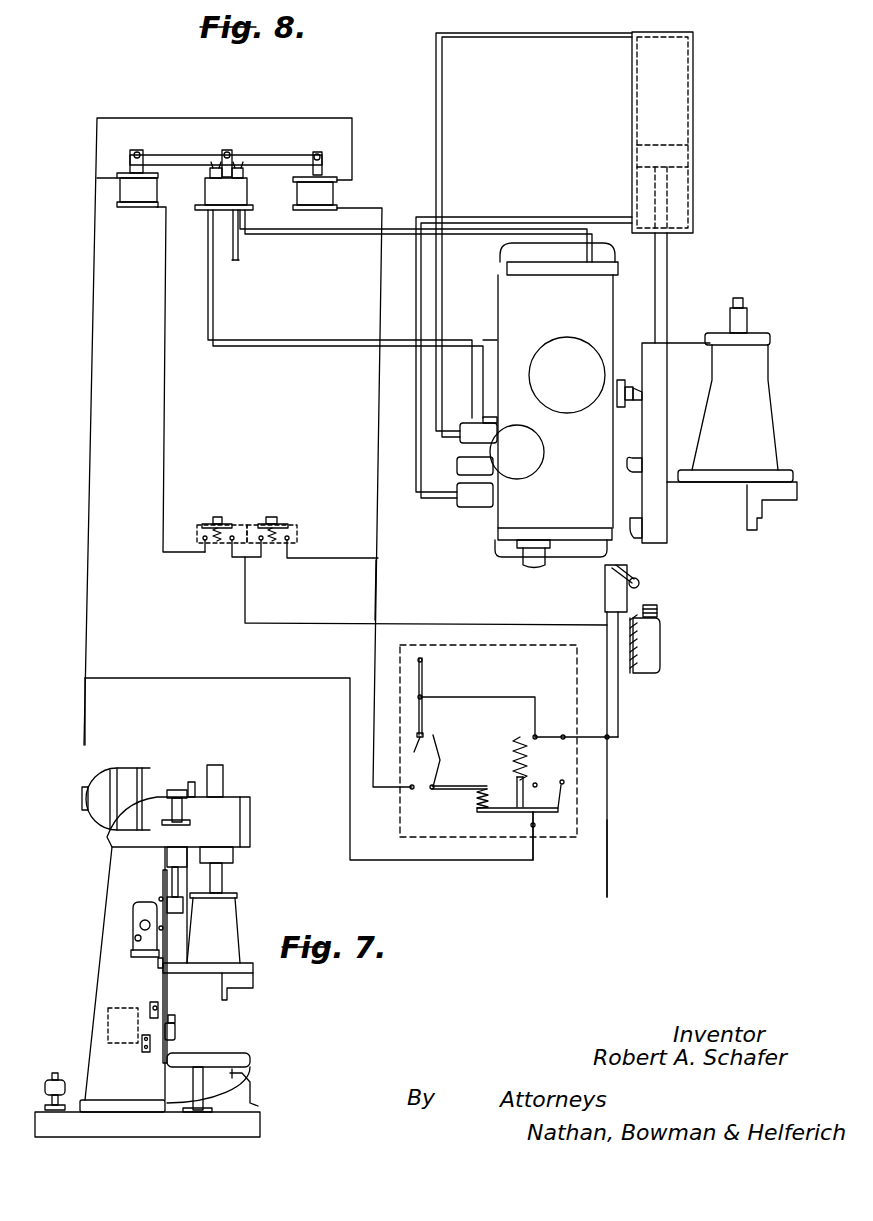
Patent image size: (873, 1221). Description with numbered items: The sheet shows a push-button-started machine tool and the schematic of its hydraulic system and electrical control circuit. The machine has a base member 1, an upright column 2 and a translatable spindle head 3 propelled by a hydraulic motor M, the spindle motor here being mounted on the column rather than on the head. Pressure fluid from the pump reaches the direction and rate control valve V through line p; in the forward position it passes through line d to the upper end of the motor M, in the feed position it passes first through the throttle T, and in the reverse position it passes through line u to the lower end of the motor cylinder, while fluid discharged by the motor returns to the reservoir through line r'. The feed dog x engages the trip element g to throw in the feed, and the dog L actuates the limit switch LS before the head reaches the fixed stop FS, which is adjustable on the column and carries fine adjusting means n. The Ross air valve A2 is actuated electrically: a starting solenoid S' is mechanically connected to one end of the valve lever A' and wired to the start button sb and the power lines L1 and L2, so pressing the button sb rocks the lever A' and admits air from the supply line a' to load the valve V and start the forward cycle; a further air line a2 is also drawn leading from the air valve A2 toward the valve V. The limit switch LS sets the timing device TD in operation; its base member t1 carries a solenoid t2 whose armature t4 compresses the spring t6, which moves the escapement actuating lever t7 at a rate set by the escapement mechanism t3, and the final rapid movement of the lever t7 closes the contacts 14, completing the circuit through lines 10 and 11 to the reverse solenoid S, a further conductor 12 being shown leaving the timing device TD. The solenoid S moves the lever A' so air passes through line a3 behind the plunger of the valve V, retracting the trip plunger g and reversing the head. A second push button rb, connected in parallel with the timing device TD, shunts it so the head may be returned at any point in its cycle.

In FIG. 7, the base member 1 is at (147, 1124).
In FIG. 7, the upright column 2 is at (133, 979).
In FIG. 8, the translatable spindle head 3 is at (732, 414).
In FIG. 7, the translatable spindle head 3 is at (232, 918).
In FIG. 8, the line 10 is at (487, 697).
In FIG. 8, the line 11 is at (377, 592).
In FIG. 8, the conductor 12 is at (534, 815).
In FIG. 8, the contacts 14 is at (417, 714).
In FIG. 8, the hydraulic motor M is at (693, 126).
In FIG. 7, the hydraulic motor M is at (185, 816).
In FIG. 8, the direction and rate control valve V is at (556, 400).
In FIG. 7, the direction and rate control valve V is at (133, 917).
In FIG. 8, the throttle T is at (517, 452).
In FIG. 7, the throttle T is at (135, 939).
In FIG. 8, the line p is at (457, 458).
In FIG. 8, the line d is at (446, 141).
In FIG. 8, the line u is at (416, 282).
In FIG. 8, the feed dog x is at (637, 390).
In FIG. 7, the feed dog x is at (158, 897).
In FIG. 8, the trip element g is at (641, 402).
In FIG. 8, the contact y is at (637, 463).
In FIG. 7, the contact y is at (163, 929).
In FIG. 8, the dog L is at (641, 530).
In FIG. 7, the dog L is at (157, 963).
In FIG. 8, the line r' is at (526, 568).
In FIG. 8, the reverse solenoid S is at (304, 193).
In FIG. 8, the starting solenoid S' is at (135, 211).
In FIG. 8, the valve lever A' is at (226, 152).
In FIG. 8, the Ross air valve A2 is at (207, 186).
In FIG. 8, the supply line a' is at (252, 246).
In FIG. 8, the conduit a2 is at (319, 233).
In FIG. 8, the line a3 is at (214, 300).
In FIG. 8, the start button sb is at (200, 520).
In FIG. 7, the start button sb is at (140, 1040).
In FIG. 8, the second push button rb is at (292, 520).
In FIG. 7, the second push button rb is at (144, 1052).
In FIG. 8, the timing device TD is at (463, 642).
In FIG. 7, the timing device TD is at (108, 1015).
In FIG. 8, the limit switch LS is at (605, 596).
In FIG. 7, the limit switch LS is at (150, 1004).
In FIG. 8, the fixed stop FS is at (661, 630).
In FIG. 7, the fixed stop FS is at (176, 1030).
In FIG. 8, the adjusting means n is at (656, 609).
In FIG. 7, the adjusting means n is at (176, 1018).
In FIG. 8, the base member t1 is at (568, 800).
In FIG. 8, the solenoid t2 is at (528, 758).
In FIG. 8, the escapement mechanism t3 is at (436, 785).
In FIG. 8, the armature t4 is at (517, 792).
In FIG. 8, the spring t6 is at (476, 801).
In FIG. 8, the escapement actuating lever t7 is at (431, 791).
In FIG. 8, the power line L1 is at (600, 890).
In FIG. 8, the power line L2 is at (84, 735).